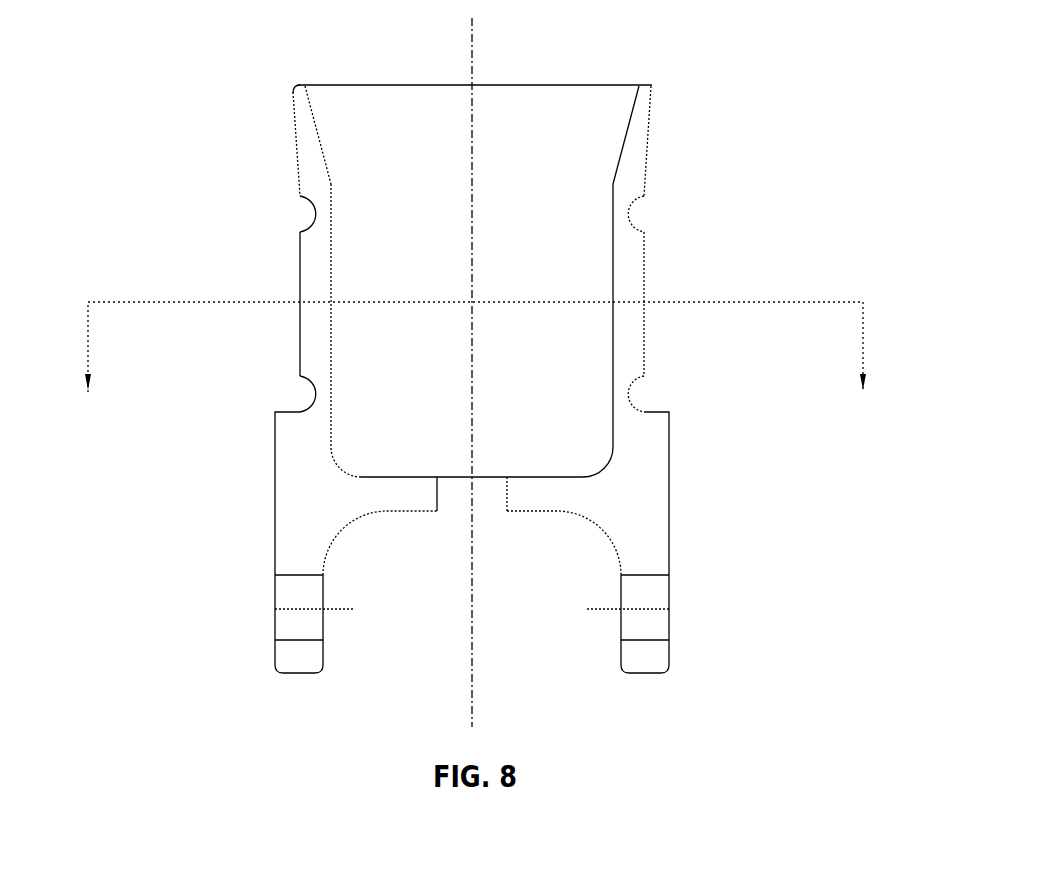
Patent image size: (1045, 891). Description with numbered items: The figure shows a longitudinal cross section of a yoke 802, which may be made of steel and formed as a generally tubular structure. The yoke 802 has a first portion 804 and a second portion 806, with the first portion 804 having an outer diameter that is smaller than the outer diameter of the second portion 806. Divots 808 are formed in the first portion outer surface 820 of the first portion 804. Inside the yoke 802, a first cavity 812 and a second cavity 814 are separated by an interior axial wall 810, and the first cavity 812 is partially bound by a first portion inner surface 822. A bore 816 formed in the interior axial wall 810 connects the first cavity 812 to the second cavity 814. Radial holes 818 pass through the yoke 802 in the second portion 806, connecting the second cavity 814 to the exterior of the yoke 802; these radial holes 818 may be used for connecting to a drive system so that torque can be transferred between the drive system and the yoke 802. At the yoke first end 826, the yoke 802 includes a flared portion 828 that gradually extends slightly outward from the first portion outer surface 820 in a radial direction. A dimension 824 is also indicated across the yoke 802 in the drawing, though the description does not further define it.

The yoke 802 is at (172, 57).
The first portion 804 is at (313, 266).
The second portion 806 is at (297, 534).
The divots 808 is at (315, 223).
The interior axial wall 810 is at (392, 494).
The first cavity 812 is at (490, 256).
The second cavity 814 is at (497, 612).
The bore 816 is at (477, 495).
The radial holes 818 is at (297, 613).
The first portion outer surface 820 is at (300, 333).
The first portion inner surface 822 is at (338, 292).
The overall width 824 is at (822, 302).
The yoke first end 826 is at (652, 85).
The flared portion 828 is at (295, 91).